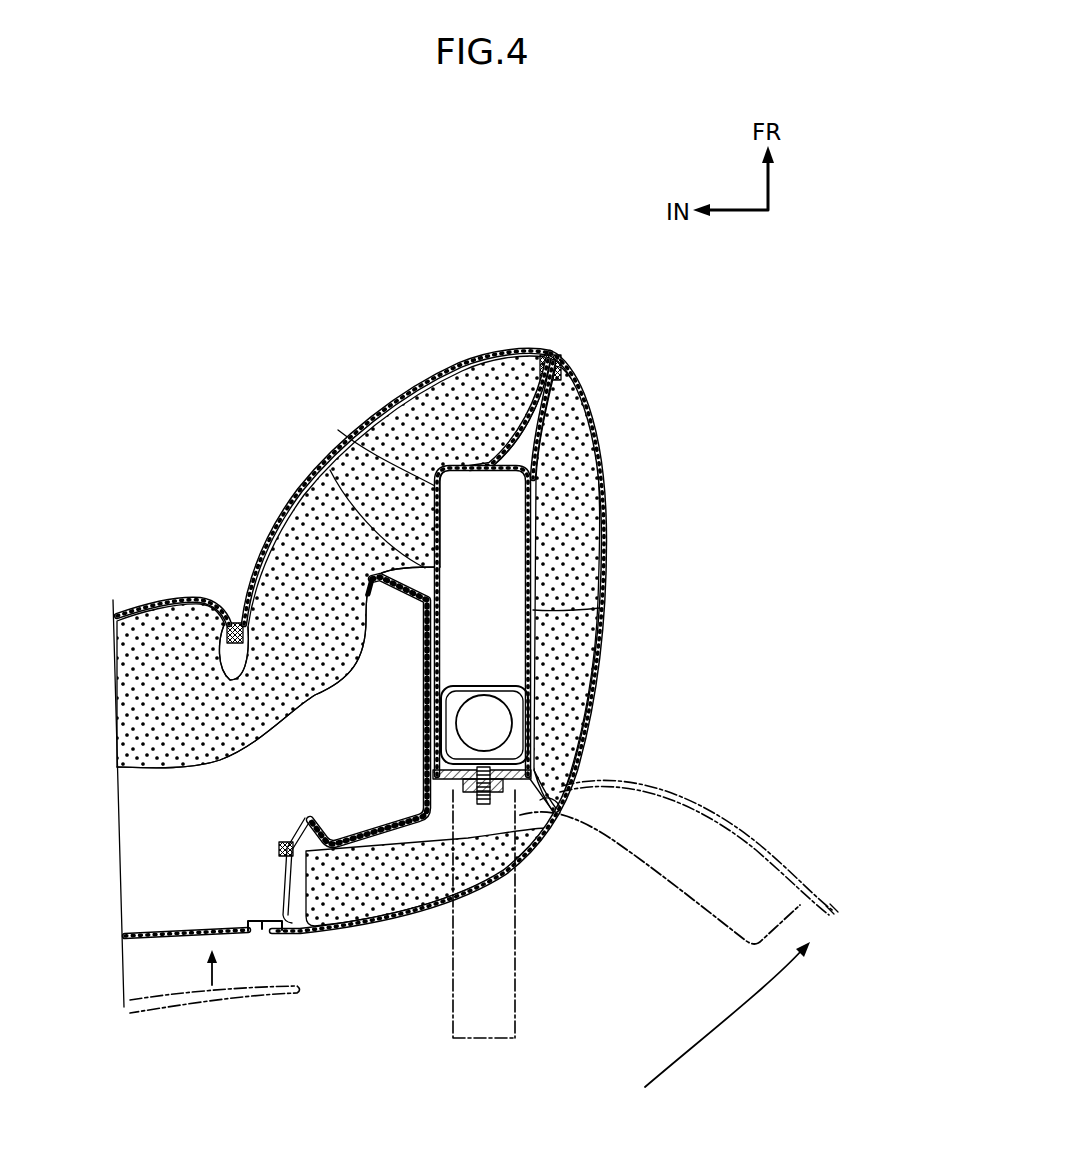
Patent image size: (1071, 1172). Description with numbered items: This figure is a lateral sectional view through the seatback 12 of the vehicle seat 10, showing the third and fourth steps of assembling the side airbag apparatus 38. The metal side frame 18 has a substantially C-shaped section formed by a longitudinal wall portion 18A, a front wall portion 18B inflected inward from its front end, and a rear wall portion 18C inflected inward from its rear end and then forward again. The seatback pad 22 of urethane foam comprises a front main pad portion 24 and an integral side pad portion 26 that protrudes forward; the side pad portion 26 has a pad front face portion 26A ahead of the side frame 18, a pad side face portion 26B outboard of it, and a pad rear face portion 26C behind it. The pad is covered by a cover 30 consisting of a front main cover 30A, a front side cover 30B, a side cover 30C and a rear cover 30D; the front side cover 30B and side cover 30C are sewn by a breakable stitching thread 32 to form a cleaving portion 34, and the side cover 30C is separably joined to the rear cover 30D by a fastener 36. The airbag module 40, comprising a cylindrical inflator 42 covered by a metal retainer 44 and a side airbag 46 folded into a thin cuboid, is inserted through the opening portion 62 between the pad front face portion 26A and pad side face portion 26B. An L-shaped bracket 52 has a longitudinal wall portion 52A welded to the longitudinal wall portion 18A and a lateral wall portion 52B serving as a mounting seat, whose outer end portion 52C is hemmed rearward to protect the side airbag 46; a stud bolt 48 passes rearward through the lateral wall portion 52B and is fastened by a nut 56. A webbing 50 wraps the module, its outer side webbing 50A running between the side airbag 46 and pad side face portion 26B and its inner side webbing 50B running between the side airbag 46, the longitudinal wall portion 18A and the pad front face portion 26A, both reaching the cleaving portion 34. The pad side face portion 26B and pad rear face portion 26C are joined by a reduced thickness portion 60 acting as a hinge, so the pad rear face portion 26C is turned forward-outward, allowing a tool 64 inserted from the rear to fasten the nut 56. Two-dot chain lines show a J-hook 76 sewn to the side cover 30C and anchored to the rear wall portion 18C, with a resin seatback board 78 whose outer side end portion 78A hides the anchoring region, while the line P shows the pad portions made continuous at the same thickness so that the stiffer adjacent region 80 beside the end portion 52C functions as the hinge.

The vehicle seat 10 is at (475, 704).
The seatback 12 is at (157, 490).
The side frame 18 is at (372, 710).
The longitudinal wall portion 18A is at (435, 765).
The front wall portion 18B is at (388, 590).
The rear wall portion 18C is at (357, 838).
The seatback pad 22 is at (206, 785).
The front main pad portion 24 is at (147, 745).
The side pad portion 26 is at (458, 673).
The pad front face portion 26A is at (420, 407).
The pad side face portion 26B is at (585, 537).
The pad rear face portion 26C is at (375, 898).
The cover 30 is at (477, 643).
The front main cover 30A is at (147, 613).
The front side cover 30B is at (285, 510).
The side cover 30C is at (605, 565).
The rear cover 30D is at (160, 930).
The stitching thread 32 is at (566, 371).
The cleaving portion 34 is at (551, 357).
The fastener 36 is at (262, 918).
The side airbag apparatus 38 is at (578, 516).
The airbag module 40 is at (520, 461).
The inflator 42 is at (512, 712).
The retainer 44 is at (483, 688).
The side airbag 46 is at (493, 467).
The stud bolt 48 is at (485, 806).
The webbing 50 is at (463, 503).
The outer side webbing 50A is at (600, 608).
The inner side webbing 50B is at (385, 393).
The bracket 52 is at (501, 688).
The longitudinal wall portion 52A is at (436, 723).
The lateral wall portion 52B is at (465, 781).
The end portion 52C is at (553, 818).
The nut 56 is at (503, 794).
The reduced thickness portion 60 is at (566, 820).
The opening portion 62 is at (533, 403).
The tool 64 is at (468, 1040).
The J-hook 76 is at (300, 814).
The seatback board 78 is at (171, 1020).
The outer side end portion 78A is at (293, 1000).
The adjacent region 80 is at (540, 790).
The two-dot chain line P is at (540, 812).